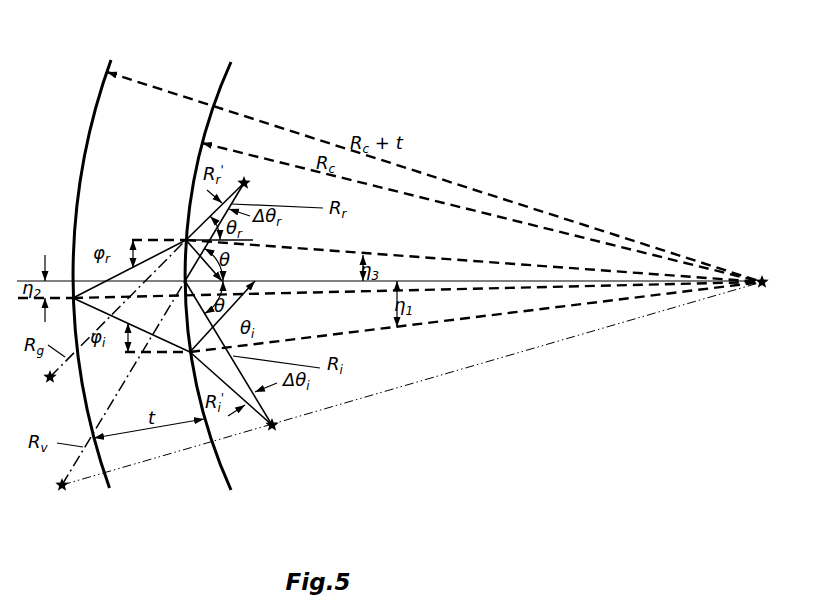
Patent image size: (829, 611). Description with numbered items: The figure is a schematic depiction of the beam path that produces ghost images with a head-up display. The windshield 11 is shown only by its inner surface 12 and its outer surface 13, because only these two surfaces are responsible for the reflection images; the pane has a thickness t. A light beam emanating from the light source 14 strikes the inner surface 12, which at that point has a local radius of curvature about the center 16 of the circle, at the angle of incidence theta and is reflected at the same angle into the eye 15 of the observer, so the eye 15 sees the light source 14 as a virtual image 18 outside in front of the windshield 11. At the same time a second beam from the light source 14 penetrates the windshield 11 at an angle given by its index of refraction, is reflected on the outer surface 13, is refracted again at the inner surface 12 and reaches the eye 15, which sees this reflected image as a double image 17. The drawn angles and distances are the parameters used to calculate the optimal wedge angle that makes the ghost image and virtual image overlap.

The windshield 11 is at (161, 257).
The inner surface 12 is at (227, 88).
The outer surface 13 is at (85, 135).
The light source 14 is at (288, 434).
The eye 15 is at (259, 183).
The center 16 is at (766, 267).
The double image 17 is at (56, 392).
The virtual image 18 is at (76, 498).